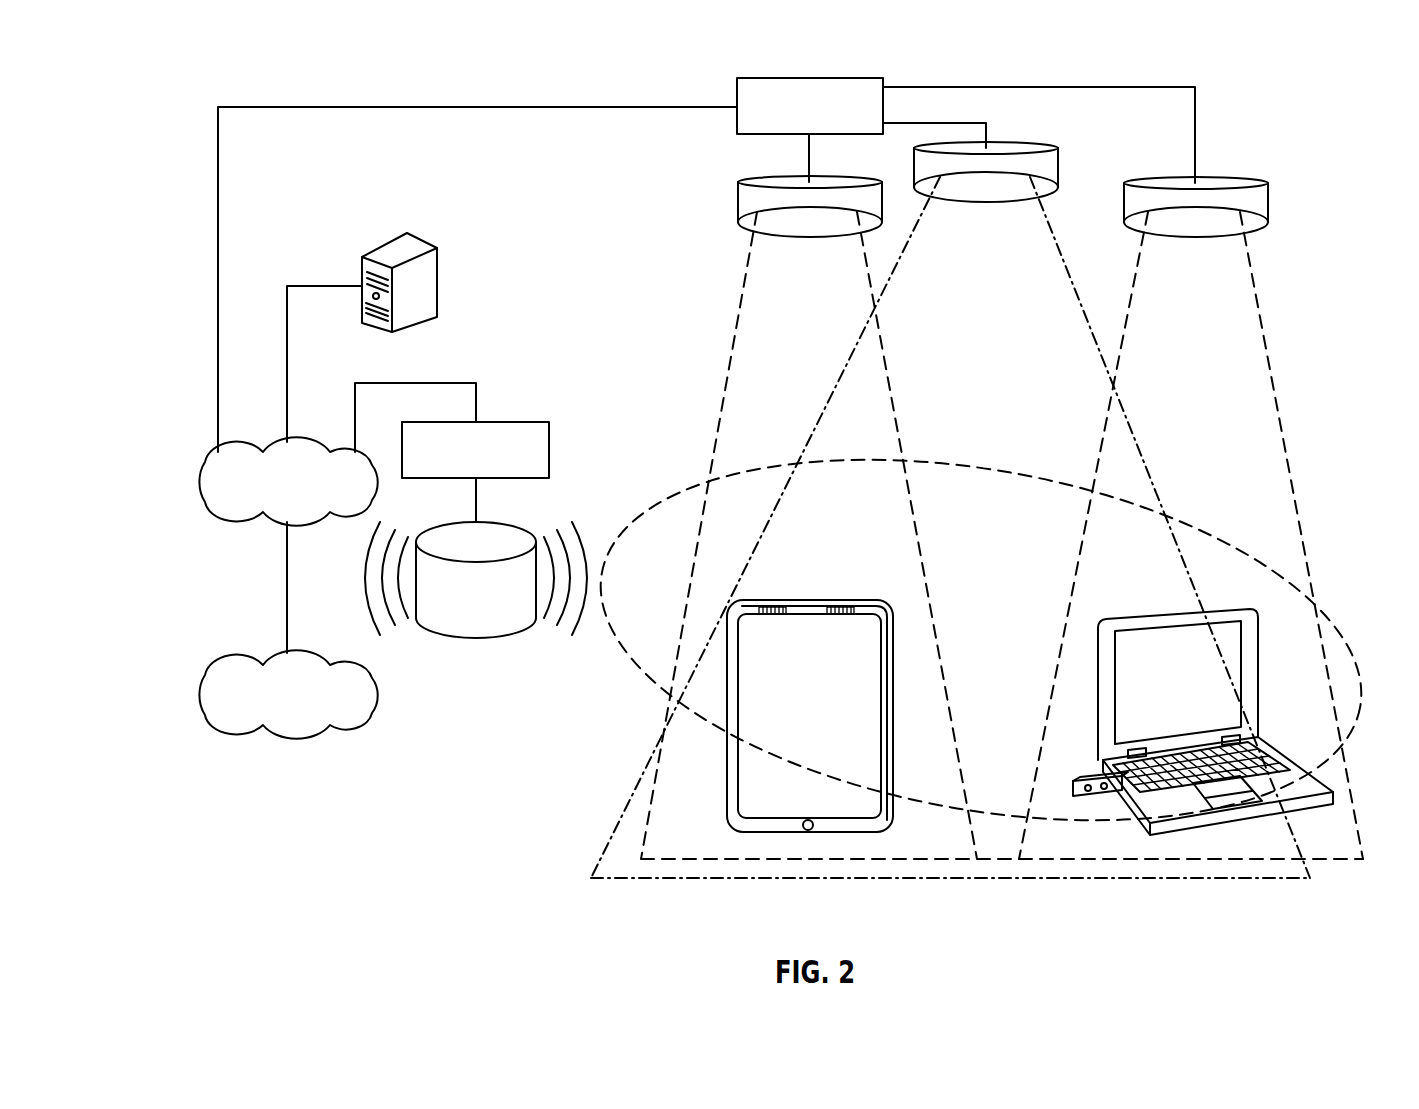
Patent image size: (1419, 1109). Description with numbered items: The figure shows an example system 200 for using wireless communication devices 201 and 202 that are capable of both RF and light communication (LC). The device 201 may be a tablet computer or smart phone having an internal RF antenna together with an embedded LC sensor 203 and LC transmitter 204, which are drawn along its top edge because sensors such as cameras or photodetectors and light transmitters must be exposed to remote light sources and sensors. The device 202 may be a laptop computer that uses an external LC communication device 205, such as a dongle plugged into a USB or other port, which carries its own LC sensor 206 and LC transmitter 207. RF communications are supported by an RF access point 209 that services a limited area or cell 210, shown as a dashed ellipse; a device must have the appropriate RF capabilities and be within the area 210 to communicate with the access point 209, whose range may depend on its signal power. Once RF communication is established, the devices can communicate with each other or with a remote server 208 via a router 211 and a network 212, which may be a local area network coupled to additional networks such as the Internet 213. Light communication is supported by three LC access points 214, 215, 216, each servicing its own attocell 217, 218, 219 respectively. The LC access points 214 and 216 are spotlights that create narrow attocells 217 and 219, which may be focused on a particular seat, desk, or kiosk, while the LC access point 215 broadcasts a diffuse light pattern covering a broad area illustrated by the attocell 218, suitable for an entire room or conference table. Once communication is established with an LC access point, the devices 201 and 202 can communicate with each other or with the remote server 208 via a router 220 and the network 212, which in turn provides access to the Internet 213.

The system 200 is at (196, 96).
The wireless communication device 201 is at (726, 796).
The wireless communication device 202 is at (1335, 800).
The LC sensor 203 is at (778, 604).
The LC transmitter 204 is at (844, 604).
The external LC communication device 205 is at (1100, 798).
The LC sensor 206 is at (1072, 784).
The LC transmitter 207 is at (1100, 778).
The remote server 208 is at (385, 243).
The RF access point 209 is at (481, 524).
The service area 210 is at (1343, 670).
The router 211 is at (480, 421).
The network 212 is at (200, 461).
The Internet 213 is at (200, 673).
The LC access point 214 is at (820, 178).
The LC access point 215 is at (1015, 143).
The LC access point 216 is at (1228, 178).
The attocell 217 is at (736, 358).
The attocell 218 is at (890, 283).
The attocell 219 is at (1258, 287).
The router 220 is at (802, 140).